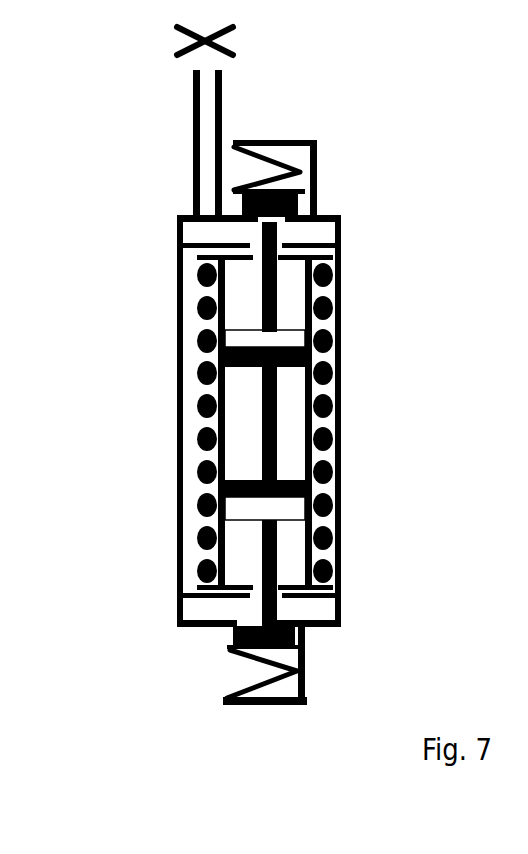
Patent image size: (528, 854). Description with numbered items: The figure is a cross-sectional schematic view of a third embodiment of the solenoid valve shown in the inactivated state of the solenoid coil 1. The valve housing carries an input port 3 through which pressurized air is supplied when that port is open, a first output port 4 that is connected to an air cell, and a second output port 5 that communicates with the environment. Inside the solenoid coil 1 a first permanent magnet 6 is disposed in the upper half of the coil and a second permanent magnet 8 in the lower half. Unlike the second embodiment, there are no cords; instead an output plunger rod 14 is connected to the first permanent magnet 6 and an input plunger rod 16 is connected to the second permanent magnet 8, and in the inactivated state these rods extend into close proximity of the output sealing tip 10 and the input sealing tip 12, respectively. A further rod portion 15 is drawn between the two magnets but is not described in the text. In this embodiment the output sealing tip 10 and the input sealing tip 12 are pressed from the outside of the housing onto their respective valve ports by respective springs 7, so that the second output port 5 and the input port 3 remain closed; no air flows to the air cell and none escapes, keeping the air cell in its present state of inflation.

The solenoid coil 1 is at (198, 272).
The input port 3 is at (260, 622).
The first output port 4 is at (193, 70).
The second output port 5 is at (268, 217).
The first permanent magnet 6 is at (239, 327).
The spring 7 is at (315, 157).
The second permanent magnet 8 is at (241, 478).
The output sealing tip 10 is at (300, 203).
The input sealing tip 12 is at (293, 630).
The output plunger rod 14 is at (275, 292).
The middle rod 15 is at (275, 434).
The input plunger rod 16 is at (275, 556).